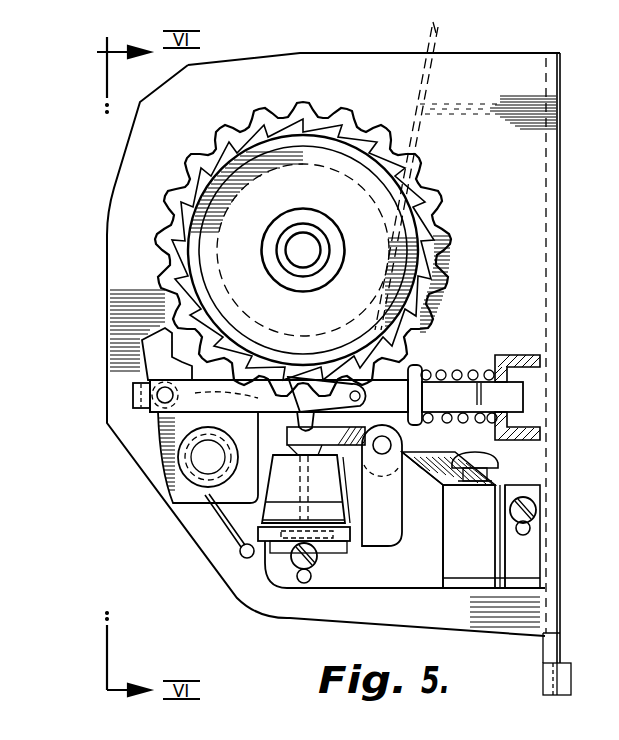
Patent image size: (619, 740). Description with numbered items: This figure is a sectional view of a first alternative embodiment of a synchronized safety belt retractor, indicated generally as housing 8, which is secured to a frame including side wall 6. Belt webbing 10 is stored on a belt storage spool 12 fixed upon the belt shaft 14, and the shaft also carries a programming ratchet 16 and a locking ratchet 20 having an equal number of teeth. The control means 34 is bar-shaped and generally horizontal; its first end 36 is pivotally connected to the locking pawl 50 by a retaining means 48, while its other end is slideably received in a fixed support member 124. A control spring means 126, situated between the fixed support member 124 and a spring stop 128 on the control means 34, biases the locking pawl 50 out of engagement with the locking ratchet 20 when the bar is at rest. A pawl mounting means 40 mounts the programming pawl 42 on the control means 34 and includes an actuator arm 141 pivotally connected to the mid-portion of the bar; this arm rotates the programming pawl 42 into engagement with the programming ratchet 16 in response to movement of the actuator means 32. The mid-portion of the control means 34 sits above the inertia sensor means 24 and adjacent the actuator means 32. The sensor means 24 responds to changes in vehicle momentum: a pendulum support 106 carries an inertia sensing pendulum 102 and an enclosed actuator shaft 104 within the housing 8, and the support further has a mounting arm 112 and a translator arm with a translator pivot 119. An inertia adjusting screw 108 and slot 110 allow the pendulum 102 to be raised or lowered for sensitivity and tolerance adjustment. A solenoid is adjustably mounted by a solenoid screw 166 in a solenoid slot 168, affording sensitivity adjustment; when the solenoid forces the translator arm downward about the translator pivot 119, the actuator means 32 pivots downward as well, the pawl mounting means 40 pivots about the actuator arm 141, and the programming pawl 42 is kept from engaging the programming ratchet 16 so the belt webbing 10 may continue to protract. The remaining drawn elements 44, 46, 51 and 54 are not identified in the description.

The side wall 6 is at (560, 137).
The retractor housing 8 is at (88, 205).
The belt webbing 10 is at (440, 40).
The belt storage spool 12 is at (265, 198).
The belt shaft 14 is at (307, 245).
The programming ratchet 16 is at (313, 135).
The locking ratchet 20 is at (192, 180).
The inertia sensor means 24 is at (251, 520).
The actuator means 32 is at (295, 418).
The control means 34 is at (126, 398).
The first end 36 is at (168, 425).
The pawl mounting means 40 is at (322, 390).
The programming pawl 42 is at (297, 420).
The cam housing 44 is at (165, 460).
The rod 46 is at (215, 521).
The retaining means 48 is at (133, 390).
The locking pawl 50 is at (157, 338).
The wall portion 51 is at (133, 357).
The ball end 54 is at (241, 556).
The inertia sensing pendulum 102 is at (357, 482).
The enclosed actuator shaft 104 is at (258, 592).
The pendulum support 106 is at (392, 541).
The inertia adjusting screw 108 is at (290, 578).
The slot 110 is at (310, 586).
The mounting arm 112 is at (390, 518).
The translator pivot 119 is at (388, 452).
The fixed support member 124 is at (513, 355).
The control spring means 126 is at (473, 370).
The spring stop 128 is at (425, 390).
The actuator arm 141 is at (385, 372).
The solenoid screw 166 is at (535, 500).
The solenoid slot 168 is at (530, 531).